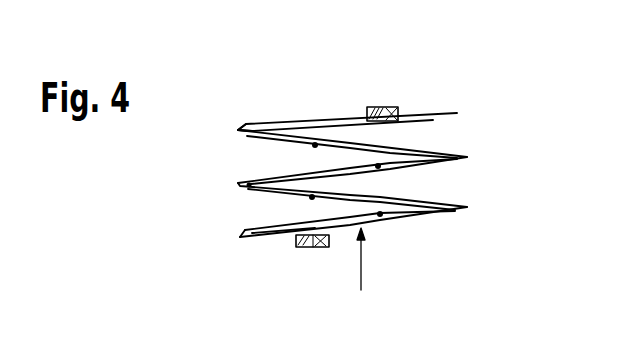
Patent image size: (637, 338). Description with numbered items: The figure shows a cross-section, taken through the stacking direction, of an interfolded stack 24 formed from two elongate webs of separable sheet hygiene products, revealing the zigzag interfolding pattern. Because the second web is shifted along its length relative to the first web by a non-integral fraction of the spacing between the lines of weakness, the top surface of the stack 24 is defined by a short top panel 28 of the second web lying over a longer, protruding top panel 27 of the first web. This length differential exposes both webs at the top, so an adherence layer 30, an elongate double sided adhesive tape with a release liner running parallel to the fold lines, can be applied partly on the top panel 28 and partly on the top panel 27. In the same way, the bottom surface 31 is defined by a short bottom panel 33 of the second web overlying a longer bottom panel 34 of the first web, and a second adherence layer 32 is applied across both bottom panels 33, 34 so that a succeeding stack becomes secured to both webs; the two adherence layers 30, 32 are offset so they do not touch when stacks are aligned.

The stack 24 is at (500, 156).
The top panel of the first web 27 is at (430, 113).
The short top panel of the second web 28 is at (303, 121).
The adherence layer 30 is at (387, 107).
The bottom surface 31 is at (362, 274).
The second adherence layer 32 is at (313, 247).
The short bottom panel of the second web 33 is at (262, 237).
The longer bottom panel of the first web 34 is at (398, 217).